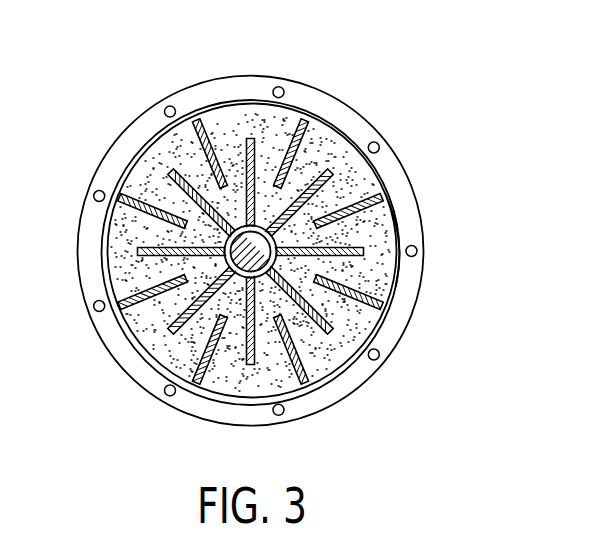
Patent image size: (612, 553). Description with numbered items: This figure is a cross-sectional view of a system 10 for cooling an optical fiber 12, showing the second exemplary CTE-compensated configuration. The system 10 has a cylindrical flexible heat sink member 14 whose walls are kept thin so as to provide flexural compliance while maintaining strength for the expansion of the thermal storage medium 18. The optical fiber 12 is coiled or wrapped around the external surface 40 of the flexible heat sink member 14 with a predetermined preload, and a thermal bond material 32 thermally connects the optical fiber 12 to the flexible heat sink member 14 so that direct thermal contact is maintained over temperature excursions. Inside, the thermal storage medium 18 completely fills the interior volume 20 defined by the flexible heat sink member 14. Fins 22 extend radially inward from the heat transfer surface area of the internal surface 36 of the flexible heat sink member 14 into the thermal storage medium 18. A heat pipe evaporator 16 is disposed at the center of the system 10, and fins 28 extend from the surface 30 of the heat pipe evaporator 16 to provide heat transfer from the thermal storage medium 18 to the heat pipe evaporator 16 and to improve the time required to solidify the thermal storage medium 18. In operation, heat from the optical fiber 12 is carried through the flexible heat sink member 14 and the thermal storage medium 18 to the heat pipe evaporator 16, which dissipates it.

The system for cooling optical fiber 10 is at (395, 80).
The optical fiber 12 is at (390, 320).
The flexible heat sink member 14 is at (195, 405).
The heat pipe evaporator 16 is at (315, 225).
The thermal storage medium 18 is at (186, 346).
The interior volume 20 is at (317, 155).
The fins 22 is at (199, 141).
The fins 28 is at (127, 259).
The surface of heat pipe evaporator 30 is at (265, 278).
The thermal bond material 32 is at (398, 214).
The internal surface 36 is at (391, 266).
The external surface 40 is at (395, 284).